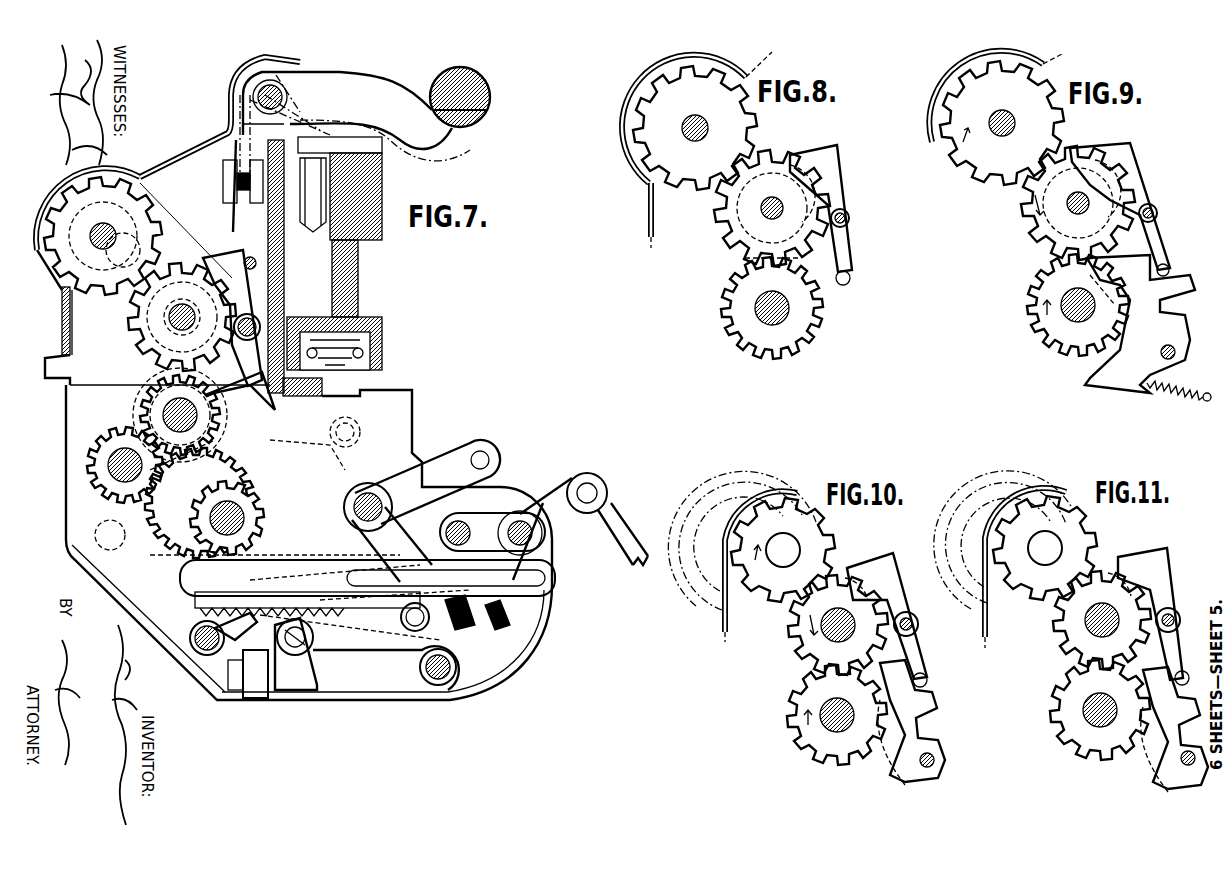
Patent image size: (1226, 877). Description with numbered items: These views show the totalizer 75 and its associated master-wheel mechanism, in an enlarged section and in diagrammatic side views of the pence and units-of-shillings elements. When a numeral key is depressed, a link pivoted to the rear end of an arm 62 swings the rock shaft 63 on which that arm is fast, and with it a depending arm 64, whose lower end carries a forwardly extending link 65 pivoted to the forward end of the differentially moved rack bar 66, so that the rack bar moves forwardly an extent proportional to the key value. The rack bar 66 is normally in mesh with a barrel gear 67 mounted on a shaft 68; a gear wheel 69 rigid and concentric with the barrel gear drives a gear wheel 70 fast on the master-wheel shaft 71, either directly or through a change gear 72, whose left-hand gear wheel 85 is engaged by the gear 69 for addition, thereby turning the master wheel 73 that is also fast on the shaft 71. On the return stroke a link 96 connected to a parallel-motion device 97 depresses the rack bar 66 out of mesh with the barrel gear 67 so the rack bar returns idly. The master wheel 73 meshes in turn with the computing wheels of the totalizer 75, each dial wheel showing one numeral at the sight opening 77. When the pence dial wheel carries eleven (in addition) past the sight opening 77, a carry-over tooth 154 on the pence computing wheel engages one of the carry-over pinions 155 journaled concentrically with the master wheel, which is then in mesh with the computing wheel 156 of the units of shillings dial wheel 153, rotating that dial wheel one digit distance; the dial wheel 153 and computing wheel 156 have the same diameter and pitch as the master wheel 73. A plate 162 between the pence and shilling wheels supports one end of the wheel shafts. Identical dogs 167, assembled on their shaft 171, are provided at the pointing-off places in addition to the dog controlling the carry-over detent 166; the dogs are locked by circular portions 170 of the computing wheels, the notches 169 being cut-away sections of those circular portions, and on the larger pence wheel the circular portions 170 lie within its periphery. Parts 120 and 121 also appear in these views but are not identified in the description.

In FIG. 7, the arm 62 is at (427, 482).
In FIG. 7, the rock shaft 63 is at (388, 532).
In FIG. 7, the depending arm 64 is at (486, 529).
In FIG. 7, the forwardly extending link 65 is at (380, 627).
In FIG. 7, the rack bar 66 is at (367, 551).
In FIG. 7, the barrel gear 67 is at (196, 528).
In FIG. 7, the shaft 68 is at (210, 512).
In FIG. 7, the gear wheel 69 is at (195, 596).
In FIG. 7, the gear wheel 70 is at (145, 412).
In FIG. 7, the master-wheel shaft 71 is at (182, 448).
In FIG. 7, the change gear 72 is at (95, 532).
In FIG. 7, the master wheel 73 is at (155, 378).
In FIG. 8, the master wheel 73 is at (806, 308).
In FIG. 9, the master wheel 73 is at (1028, 293).
In FIG. 7, the totalizer 75 is at (200, 158).
In FIG. 8, the totalizer 75 is at (650, 202).
In FIG. 10, the totalizer 75 is at (720, 600).
In FIG. 11, the totalizer 75 is at (985, 605).
In FIG. 7, the sight opening 77 is at (62, 183).
In FIG. 8, the sight opening 77 is at (660, 76).
In FIG. 9, the sight opening 77 is at (964, 70).
In FIG. 10, the sight opening 77 is at (766, 485).
In FIG. 11, the sight opening 77 is at (1010, 500).
In FIG. 7, the left-hand gear wheel 85 is at (100, 450).
In FIG. 7, the link 96 is at (630, 568).
In FIG. 7, the parallel-motion device 97 is at (555, 540).
In FIG. 7, the gear 120 is at (140, 320).
In FIG. 8, the gear 120 is at (730, 229).
In FIG. 9, the gear 120 is at (1030, 216).
In FIG. 7, the numbered ratchet wheel 121 is at (122, 203).
In FIG. 8, the numbered ratchet wheel 121 is at (684, 190).
In FIG. 9, the numbered ratchet wheel 121 is at (980, 178).
In FIG. 10, the numbered ratchet wheel 121 is at (709, 503).
In FIG. 11, the numbered ratchet wheel 121 is at (960, 530).
In FIG. 7, the units of shillings dial wheel 153 is at (150, 225).
In FIG. 10, the units of shillings dial wheel 153 is at (832, 530).
In FIG. 11, the units of shillings dial wheel 153 is at (1021, 597).
In FIG. 7, the carry-over tooth 154 is at (200, 372).
In FIG. 8, the carry-over tooth 154 is at (745, 258).
In FIG. 9, the carry-over tooth 154 is at (1088, 288).
In FIG. 7, the carry-over pinions 155 is at (140, 400).
In FIG. 8, the carry-over pinions 155 is at (812, 325).
In FIG. 9, the carry-over pinions 155 is at (1110, 300).
In FIG. 10, the carry-over pinions 155 is at (823, 765).
In FIG. 11, the carry-over pinions 155 is at (1095, 765).
In FIG. 7, the computing wheel 156 is at (145, 340).
In FIG. 10, the computing wheel 156 is at (806, 652).
In FIG. 11, the computing wheel 156 is at (1102, 651).
In FIG. 7, the plate 162 is at (240, 208).
In FIG. 7, the carry-over detent 166 is at (240, 434).
In FIG. 9, the carry-over detent 166 is at (1158, 318).
In FIG. 10, the carry-over detent 166 is at (916, 711).
In FIG. 11, the carry-over detent 166 is at (1145, 740).
In FIG. 7, the dog 167 is at (250, 257).
In FIG. 8, the dog 167 is at (840, 183).
In FIG. 9, the dog 167 is at (1130, 150).
In FIG. 10, the dog 167 is at (900, 590).
In FIG. 11, the dog 167 is at (1153, 616).
In FIG. 7, the notches 169 is at (182, 317).
In FIG. 8, the notches 169 is at (772, 208).
In FIG. 9, the notches 169 is at (1078, 203).
In FIG. 10, the notches 169 is at (838, 625).
In FIG. 11, the notches 169 is at (1102, 620).
In FIG. 8, the circular portions 170 is at (776, 204).
In FIG. 9, the circular portions 170 is at (1080, 199).
In FIG. 7, the shaft 171 is at (262, 318).
In FIG. 8, the shaft 171 is at (850, 219).
In FIG. 10, the shaft 171 is at (920, 630).
In FIG. 11, the shaft 171 is at (1168, 620).